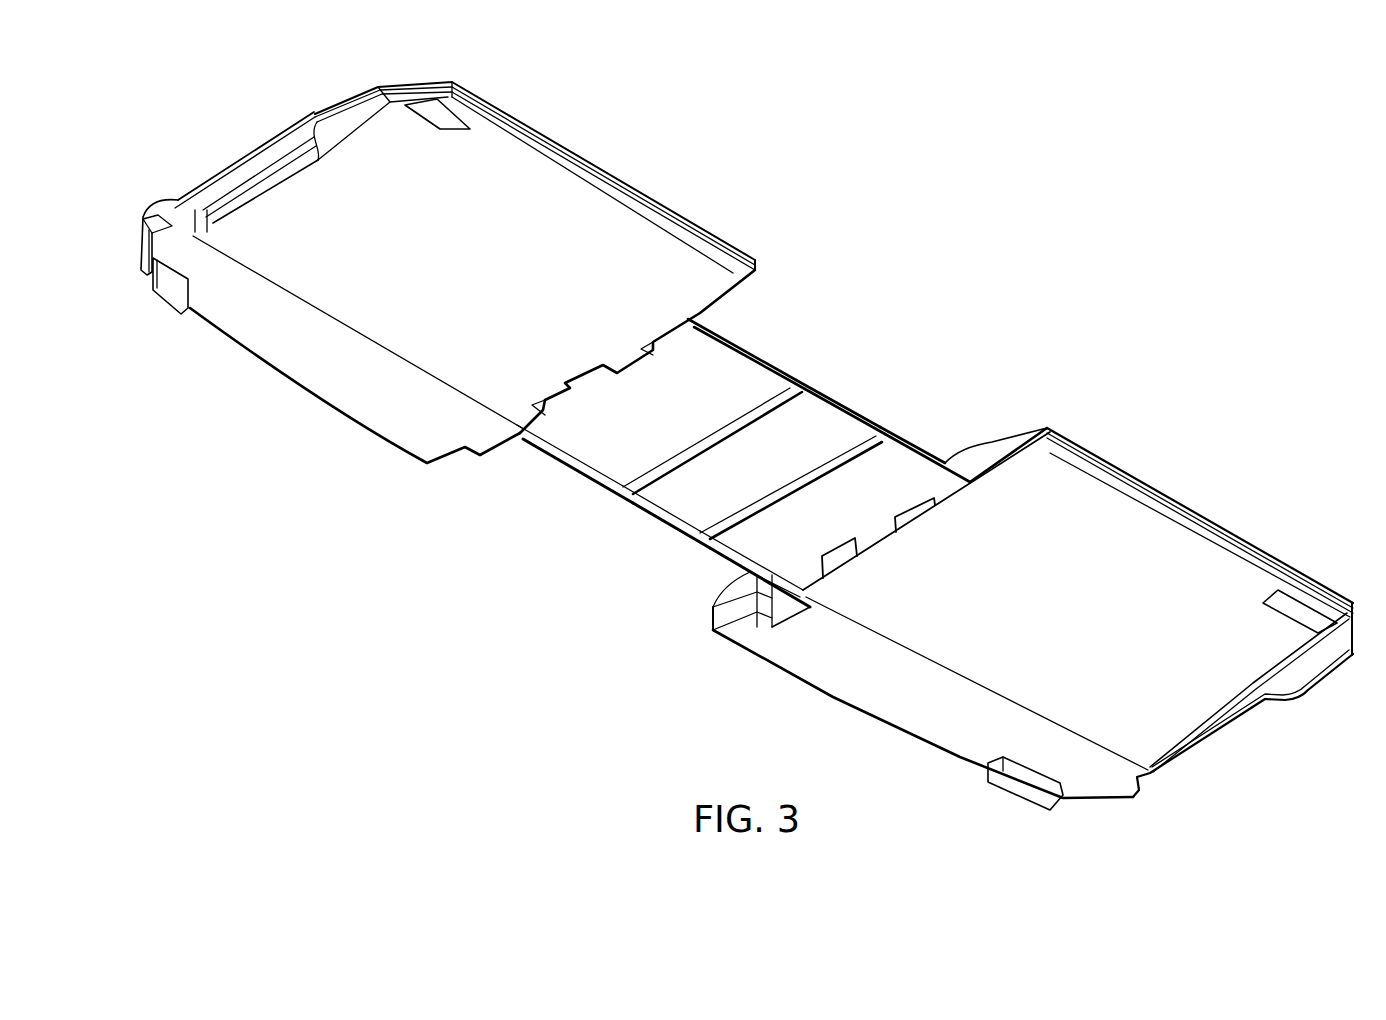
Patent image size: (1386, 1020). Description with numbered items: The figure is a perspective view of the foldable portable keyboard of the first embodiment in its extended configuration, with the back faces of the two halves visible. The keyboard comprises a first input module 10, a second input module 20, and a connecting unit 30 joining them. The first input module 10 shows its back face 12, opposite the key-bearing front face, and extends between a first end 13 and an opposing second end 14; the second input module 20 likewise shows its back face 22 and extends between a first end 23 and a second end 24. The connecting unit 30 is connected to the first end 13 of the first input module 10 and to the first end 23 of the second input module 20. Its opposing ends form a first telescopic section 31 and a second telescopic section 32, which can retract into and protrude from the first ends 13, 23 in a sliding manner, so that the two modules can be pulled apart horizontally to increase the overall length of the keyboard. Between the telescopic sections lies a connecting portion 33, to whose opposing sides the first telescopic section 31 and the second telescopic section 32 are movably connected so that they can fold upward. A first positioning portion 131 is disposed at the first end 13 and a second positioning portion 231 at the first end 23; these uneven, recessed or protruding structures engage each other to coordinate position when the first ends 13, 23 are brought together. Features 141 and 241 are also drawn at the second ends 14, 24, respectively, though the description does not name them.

The first input module 10 is at (643, 178).
The back face 12 is at (390, 318).
The first end 13 is at (453, 455).
The first positioning portion 131 is at (557, 392).
The second end 14 is at (183, 176).
The first rib 141 is at (263, 157).
The second input module 20 is at (1197, 498).
The back face 22 is at (985, 657).
The first end 23 is at (716, 608).
The second positioning portion 231 is at (838, 556).
The second end 24 is at (1210, 770).
The second rib 241 is at (1245, 710).
The connecting unit 30 is at (743, 456).
The first telescopic section 31 is at (723, 380).
The second telescopic section 32 is at (835, 493).
The connecting portion 33 is at (815, 423).